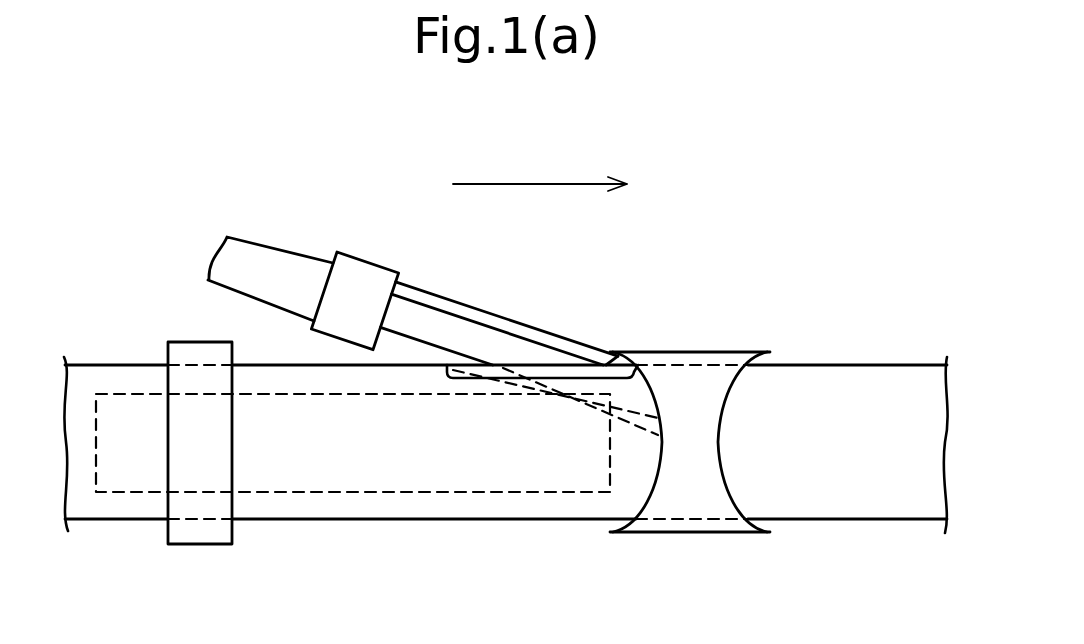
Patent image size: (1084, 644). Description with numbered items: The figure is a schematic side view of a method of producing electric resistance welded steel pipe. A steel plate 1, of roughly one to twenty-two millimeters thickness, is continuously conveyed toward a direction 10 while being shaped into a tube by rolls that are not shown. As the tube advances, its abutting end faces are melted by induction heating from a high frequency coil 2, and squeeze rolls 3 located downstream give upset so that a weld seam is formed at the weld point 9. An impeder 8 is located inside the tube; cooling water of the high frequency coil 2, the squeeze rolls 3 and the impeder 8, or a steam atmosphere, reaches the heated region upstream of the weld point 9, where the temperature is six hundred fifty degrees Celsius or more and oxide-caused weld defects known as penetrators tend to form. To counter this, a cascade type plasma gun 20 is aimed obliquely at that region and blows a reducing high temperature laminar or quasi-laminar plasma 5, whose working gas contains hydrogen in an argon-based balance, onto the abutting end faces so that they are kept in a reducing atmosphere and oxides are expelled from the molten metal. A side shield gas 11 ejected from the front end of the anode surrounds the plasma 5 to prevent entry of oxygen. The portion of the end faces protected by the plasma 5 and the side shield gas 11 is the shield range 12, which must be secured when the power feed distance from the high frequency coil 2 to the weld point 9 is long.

The steel plate 1 is at (100, 365).
The high frequency coil 2 is at (195, 533).
The squeeze rolls 3 is at (707, 351).
The reducing high temperature laminar plasma 5 is at (485, 345).
The impeder 8 is at (327, 473).
The weld point 9 is at (633, 363).
The direction 10 is at (510, 184).
The side shield gas 11 is at (443, 300).
The shield range 12 is at (540, 380).
The cascade type plasma gun 20 is at (357, 280).